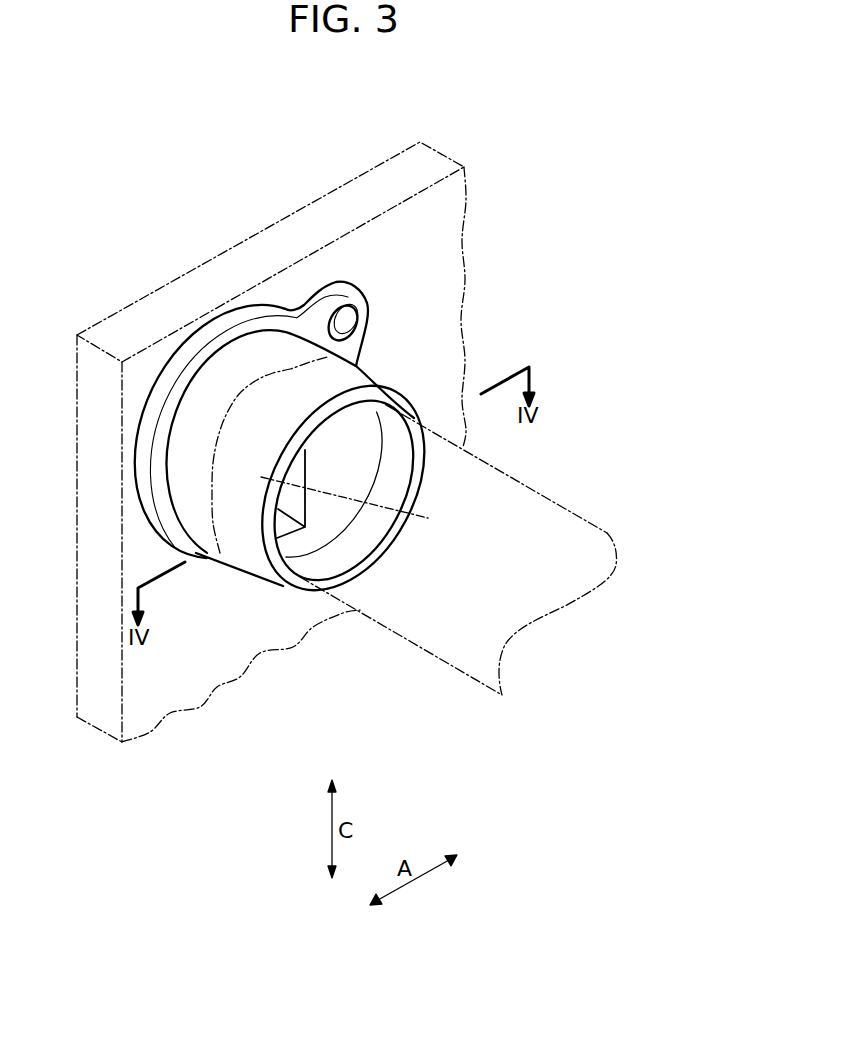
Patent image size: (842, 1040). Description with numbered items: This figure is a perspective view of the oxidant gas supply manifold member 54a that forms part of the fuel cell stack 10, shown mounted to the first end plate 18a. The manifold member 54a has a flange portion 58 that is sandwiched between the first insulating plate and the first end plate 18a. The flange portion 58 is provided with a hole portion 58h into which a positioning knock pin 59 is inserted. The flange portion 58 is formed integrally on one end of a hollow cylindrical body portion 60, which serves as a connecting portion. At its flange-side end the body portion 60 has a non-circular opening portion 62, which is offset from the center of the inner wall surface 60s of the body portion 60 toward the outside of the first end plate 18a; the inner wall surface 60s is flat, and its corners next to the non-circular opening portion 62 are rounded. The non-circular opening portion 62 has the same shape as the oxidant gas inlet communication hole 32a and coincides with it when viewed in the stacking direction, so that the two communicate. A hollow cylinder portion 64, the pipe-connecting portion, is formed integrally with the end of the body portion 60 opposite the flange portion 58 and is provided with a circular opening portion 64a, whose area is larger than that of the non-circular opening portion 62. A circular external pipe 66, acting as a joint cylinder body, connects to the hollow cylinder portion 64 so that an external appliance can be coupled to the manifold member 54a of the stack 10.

The support structure 10 is at (433, 68).
The first end plate 18a is at (237, 246).
The oxidant gas inlet communication hole 32a is at (364, 505).
The oxidant gas supply manifold member 54a is at (429, 487).
The flange portion 58 is at (365, 312).
The hole portion 58h is at (337, 328).
The positioning knock pin 59 is at (347, 318).
The body portion 60 is at (270, 584).
The inner wall surface 60s is at (347, 503).
The non-circular opening portion 62 is at (287, 524).
The hollow cylinder portion 64 is at (385, 540).
The circular opening portion 64a is at (362, 537).
The external pipe 66 is at (560, 517).